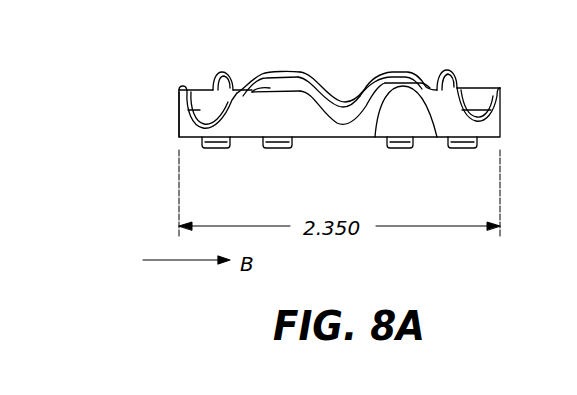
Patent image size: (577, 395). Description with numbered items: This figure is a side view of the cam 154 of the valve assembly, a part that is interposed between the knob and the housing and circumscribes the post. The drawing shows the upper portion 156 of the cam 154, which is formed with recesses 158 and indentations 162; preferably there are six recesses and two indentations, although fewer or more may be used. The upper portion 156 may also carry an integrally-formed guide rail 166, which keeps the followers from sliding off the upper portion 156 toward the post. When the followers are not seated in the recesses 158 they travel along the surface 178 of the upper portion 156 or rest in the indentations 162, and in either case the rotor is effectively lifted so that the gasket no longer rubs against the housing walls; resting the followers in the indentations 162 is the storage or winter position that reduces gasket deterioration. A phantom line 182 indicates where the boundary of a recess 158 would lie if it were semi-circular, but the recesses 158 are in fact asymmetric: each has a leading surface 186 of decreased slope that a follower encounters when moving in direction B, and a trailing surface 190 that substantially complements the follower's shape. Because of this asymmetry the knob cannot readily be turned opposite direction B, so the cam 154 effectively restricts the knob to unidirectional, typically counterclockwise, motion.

The cam 154 is at (356, 33).
The upper portion 156 is at (179, 96).
The recess 158 is at (177, 128).
The indentation 162 is at (260, 88).
The guide rail 166 is at (398, 68).
The surface 178 is at (438, 135).
The phantom line 182 is at (362, 118).
The leading surface 186 is at (478, 92).
The trailing surface 190 is at (312, 88).